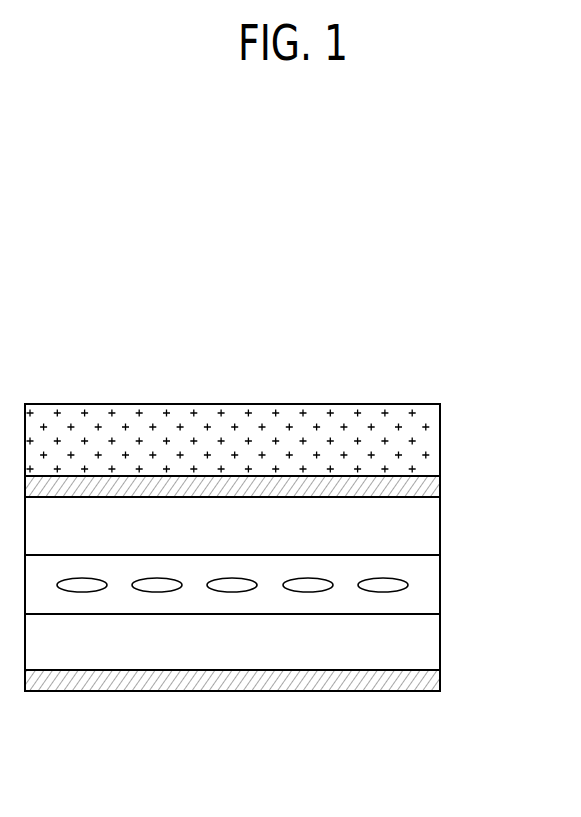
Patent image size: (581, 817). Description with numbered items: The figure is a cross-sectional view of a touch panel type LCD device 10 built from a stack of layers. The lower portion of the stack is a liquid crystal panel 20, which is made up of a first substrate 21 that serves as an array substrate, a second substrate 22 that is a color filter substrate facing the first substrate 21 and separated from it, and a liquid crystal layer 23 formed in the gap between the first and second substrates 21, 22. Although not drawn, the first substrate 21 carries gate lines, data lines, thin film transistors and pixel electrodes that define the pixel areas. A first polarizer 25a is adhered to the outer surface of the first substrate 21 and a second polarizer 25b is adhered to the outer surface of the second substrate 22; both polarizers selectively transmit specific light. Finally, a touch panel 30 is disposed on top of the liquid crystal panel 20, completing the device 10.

The touch panel type LCD device 10 is at (449, 367).
The touch panel 30 is at (426, 442).
The second polarizer 25b is at (426, 485).
The liquid crystal panel 20 is at (517, 536).
The second substrate 22 is at (425, 532).
The liquid crystal layer 23 is at (425, 586).
The first substrate 21 is at (425, 642).
The first polarizer 25a is at (425, 678).